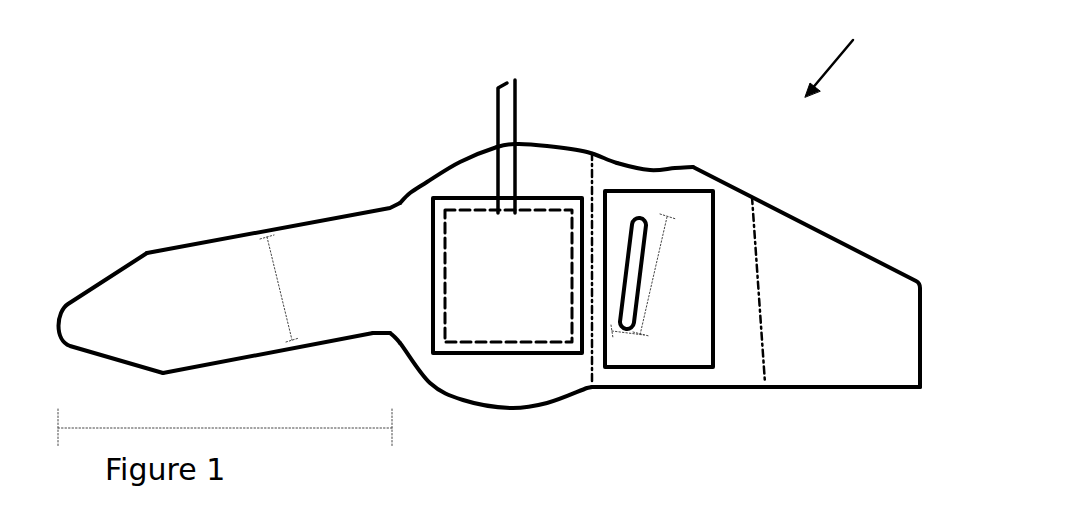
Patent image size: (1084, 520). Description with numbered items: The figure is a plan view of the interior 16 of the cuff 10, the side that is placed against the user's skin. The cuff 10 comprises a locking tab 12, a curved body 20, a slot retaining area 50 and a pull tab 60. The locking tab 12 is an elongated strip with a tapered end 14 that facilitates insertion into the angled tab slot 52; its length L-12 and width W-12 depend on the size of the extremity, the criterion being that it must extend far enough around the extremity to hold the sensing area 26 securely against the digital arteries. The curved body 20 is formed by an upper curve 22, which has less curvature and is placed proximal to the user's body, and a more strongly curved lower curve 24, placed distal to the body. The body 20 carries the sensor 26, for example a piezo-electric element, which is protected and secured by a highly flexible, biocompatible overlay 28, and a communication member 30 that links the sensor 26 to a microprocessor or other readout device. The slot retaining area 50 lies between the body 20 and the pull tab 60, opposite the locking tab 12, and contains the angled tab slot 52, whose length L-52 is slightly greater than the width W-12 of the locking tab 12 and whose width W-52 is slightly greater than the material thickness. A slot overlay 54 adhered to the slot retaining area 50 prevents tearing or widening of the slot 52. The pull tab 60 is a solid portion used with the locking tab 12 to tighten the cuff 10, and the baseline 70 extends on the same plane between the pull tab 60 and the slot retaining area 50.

The cuff 10 is at (848, 55).
The locking tab 12 is at (242, 255).
The tapered end 14 is at (65, 303).
The interior 16 is at (352, 337).
The curved body 20 is at (430, 185).
The upper curve 22 is at (562, 142).
The lower curve 24 is at (552, 407).
The sensing area 26 is at (508, 276).
The overlay 28 is at (433, 267).
The communication member 30 is at (500, 122).
The slot retaining area 50 is at (657, 167).
The angled tab slot 52 is at (634, 233).
The slot overlay 54 is at (713, 303).
The pull tab 60 is at (880, 257).
The baseline 70 is at (785, 388).
The width of locking tab W-12 is at (254, 288).
The length of locking tab L-12 is at (225, 416).
The length of tab slot L-52 is at (669, 275).
The width of tab slot W-52 is at (649, 345).